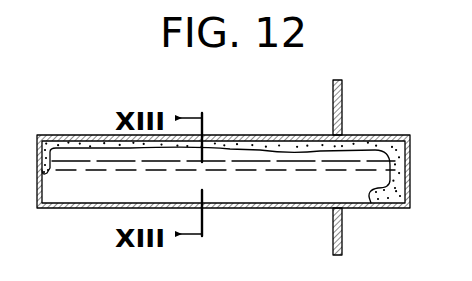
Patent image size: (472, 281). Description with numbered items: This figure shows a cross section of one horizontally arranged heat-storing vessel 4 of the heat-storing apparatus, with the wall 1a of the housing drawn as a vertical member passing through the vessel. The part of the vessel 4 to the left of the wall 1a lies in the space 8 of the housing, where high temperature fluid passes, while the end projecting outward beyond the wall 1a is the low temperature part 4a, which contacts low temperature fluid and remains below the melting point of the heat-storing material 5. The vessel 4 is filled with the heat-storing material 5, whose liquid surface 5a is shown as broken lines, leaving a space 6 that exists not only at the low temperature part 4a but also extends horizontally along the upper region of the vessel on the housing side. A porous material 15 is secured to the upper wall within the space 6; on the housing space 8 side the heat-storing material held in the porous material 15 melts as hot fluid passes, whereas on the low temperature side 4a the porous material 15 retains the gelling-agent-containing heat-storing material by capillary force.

The heat-storing vessel 4 is at (255, 208).
The low temperature part 4a is at (411, 160).
The heat-storing material 5 is at (300, 204).
The liquid surface 5a is at (260, 165).
The space 6 is at (67, 152).
The porous material 15 is at (85, 147).
The space of housing 8 is at (310, 128).
The wall of housing 1a is at (342, 115).